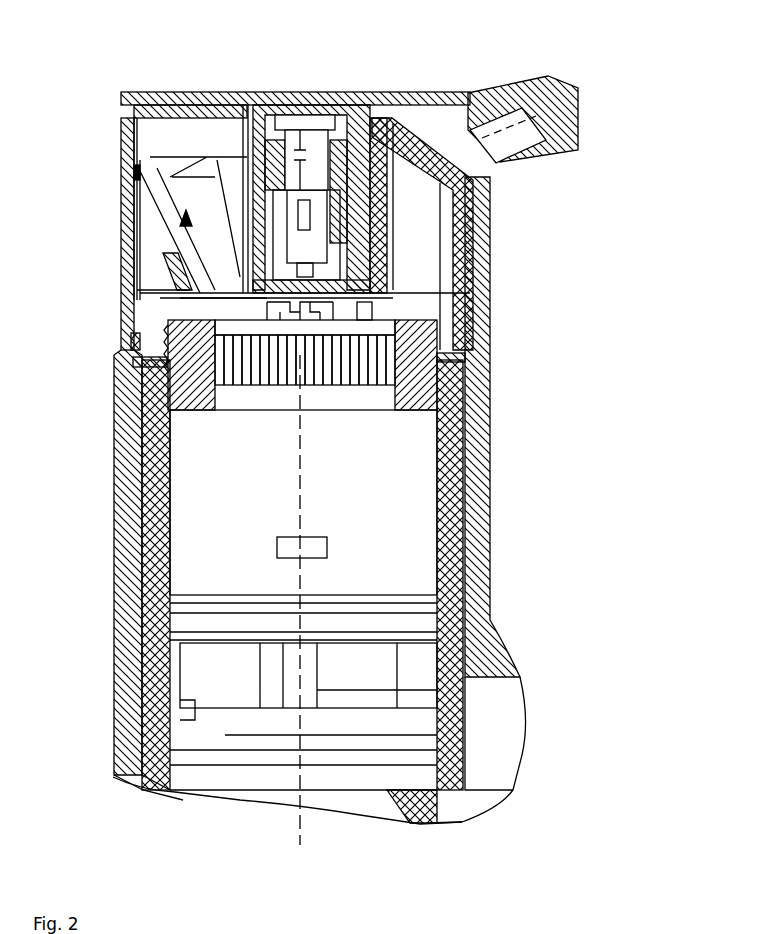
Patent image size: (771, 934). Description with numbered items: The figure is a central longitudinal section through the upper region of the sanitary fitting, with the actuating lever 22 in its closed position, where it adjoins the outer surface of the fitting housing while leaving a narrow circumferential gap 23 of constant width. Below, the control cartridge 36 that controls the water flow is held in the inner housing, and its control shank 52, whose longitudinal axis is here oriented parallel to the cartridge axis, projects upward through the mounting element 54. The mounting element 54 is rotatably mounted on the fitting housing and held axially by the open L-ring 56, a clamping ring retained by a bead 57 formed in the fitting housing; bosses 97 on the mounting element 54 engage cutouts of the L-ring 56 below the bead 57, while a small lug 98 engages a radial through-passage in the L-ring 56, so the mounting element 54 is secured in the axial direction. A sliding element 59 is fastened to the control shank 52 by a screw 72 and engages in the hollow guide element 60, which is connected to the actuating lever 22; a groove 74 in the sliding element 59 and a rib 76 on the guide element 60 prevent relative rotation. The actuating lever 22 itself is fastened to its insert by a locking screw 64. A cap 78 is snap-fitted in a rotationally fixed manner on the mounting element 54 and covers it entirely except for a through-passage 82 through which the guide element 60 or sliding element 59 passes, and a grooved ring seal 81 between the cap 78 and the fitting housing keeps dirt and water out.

The actuating lever 22 is at (572, 95).
The gap 23 is at (124, 178).
The control cartridge 36 is at (378, 512).
The control shank 52 is at (328, 250).
The mounting element 54 is at (465, 292).
The L-ring 56 is at (452, 350).
The bead 57 is at (138, 301).
The sliding element 59 is at (236, 95).
The guide element 60 is at (250, 243).
The locking screw 64 is at (575, 148).
The screw 72 is at (338, 94).
The groove 74 is at (252, 211).
The rib 76 is at (245, 296).
The cap 78 is at (480, 186).
The grooved ring seal 81 is at (470, 213).
The through-passage 82 is at (122, 163).
The bosses 97 is at (135, 340).
The lug 98 is at (470, 348).